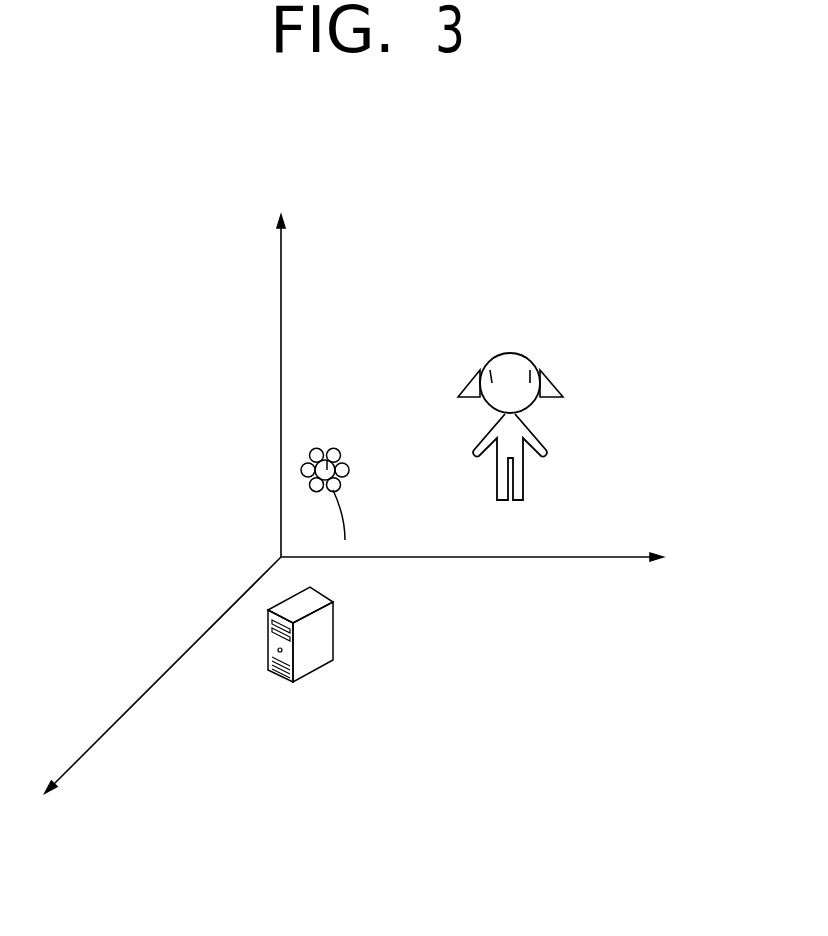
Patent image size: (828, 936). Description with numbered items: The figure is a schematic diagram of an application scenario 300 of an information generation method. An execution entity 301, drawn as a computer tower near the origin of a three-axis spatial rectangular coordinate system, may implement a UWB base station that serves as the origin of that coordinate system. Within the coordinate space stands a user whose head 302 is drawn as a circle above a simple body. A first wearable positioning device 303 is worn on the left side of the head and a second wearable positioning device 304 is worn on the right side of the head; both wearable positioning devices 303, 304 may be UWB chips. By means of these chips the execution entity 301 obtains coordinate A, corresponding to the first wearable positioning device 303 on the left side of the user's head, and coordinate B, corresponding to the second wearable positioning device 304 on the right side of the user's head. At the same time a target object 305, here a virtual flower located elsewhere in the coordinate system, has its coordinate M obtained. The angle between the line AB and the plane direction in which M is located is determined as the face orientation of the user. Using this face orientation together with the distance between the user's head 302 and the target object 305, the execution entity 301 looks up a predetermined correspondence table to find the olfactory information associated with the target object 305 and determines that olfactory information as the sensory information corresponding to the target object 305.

The application scenario 300 is at (698, 197).
The execution entity 301 is at (333, 632).
The user's head 302 is at (510, 353).
The first wearable positioning device 303 is at (553, 378).
The second wearable positioning device 304 is at (472, 380).
The target object 305 is at (335, 448).
The coordinate A is at (490, 370).
The coordinate B is at (530, 370).
The coordinate M is at (327, 460).